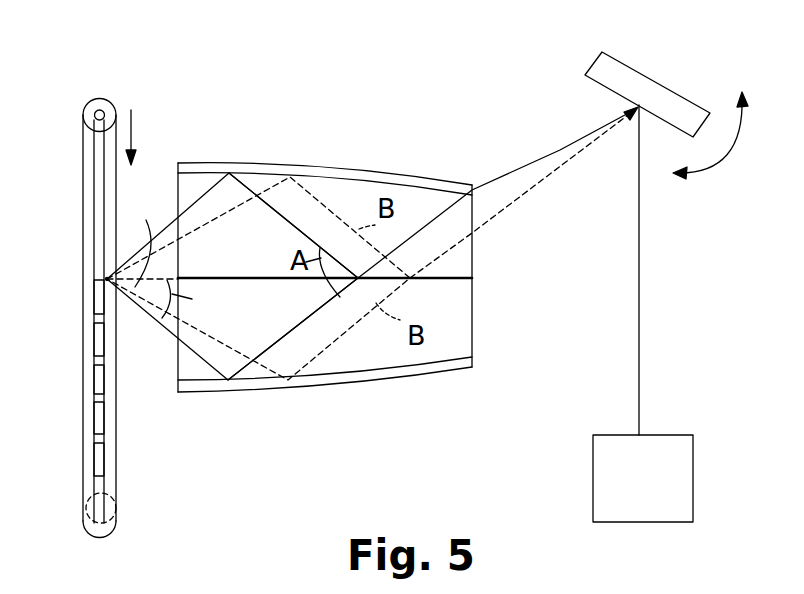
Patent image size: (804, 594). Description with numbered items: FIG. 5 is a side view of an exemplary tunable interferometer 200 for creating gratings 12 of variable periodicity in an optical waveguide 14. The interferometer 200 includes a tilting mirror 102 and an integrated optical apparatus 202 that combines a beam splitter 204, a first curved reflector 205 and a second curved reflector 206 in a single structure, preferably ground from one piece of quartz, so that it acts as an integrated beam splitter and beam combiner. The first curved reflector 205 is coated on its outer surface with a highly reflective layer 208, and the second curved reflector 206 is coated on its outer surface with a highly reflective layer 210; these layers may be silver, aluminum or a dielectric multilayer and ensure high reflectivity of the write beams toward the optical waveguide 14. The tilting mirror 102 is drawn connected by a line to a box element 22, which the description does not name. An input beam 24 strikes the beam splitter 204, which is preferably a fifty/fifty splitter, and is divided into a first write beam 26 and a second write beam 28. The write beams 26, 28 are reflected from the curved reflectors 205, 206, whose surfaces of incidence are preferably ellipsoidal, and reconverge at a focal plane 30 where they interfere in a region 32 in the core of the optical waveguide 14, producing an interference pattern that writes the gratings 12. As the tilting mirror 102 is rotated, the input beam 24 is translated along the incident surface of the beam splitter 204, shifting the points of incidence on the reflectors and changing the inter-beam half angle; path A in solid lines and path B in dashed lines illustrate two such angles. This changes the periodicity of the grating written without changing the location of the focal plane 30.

The gratings 12 is at (78, 270).
The optical waveguide 14 is at (83, 157).
The motor 22 is at (637, 522).
The input beam 24 is at (640, 295).
The first write beam 26 is at (277, 214).
The second write beam 28 is at (266, 348).
The focal plane 30 is at (112, 290).
The region 32 is at (104, 276).
The tilting mirror 102 is at (653, 78).
The tunable interferometer 200 is at (455, 88).
The integrated optical apparatus 202 is at (375, 279).
The beam splitter 204 is at (452, 282).
The first curved reflector 205 is at (251, 173).
The second curved reflector 206 is at (262, 382).
The highly reflective layer 208 is at (345, 165).
The highly reflective layer 210 is at (368, 380).